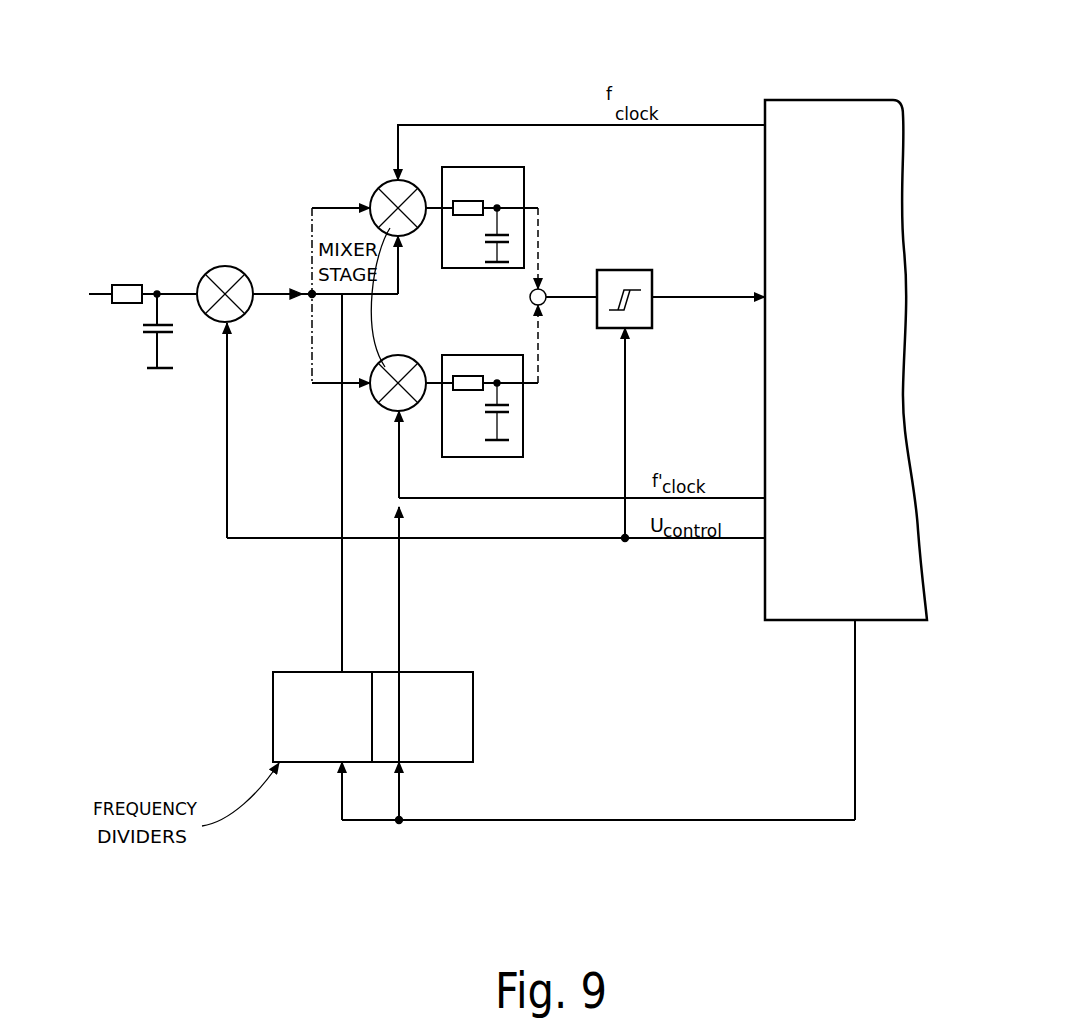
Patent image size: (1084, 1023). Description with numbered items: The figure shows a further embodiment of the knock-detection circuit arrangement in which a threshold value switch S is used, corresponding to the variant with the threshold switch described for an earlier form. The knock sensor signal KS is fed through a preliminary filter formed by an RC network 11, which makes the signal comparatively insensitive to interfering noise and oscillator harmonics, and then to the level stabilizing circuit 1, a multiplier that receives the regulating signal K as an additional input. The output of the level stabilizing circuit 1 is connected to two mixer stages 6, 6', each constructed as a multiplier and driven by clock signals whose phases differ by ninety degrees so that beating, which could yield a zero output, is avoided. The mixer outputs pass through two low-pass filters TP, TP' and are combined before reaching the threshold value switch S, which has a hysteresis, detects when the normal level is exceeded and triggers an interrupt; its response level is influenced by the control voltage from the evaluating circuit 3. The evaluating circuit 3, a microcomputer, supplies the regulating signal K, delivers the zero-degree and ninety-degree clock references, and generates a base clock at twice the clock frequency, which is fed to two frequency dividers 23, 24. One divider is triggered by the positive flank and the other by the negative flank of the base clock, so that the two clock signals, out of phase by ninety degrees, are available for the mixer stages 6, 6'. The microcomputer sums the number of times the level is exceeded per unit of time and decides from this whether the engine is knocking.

The level stabilizing circuit 1 is at (219, 274).
The evaluating circuit 3 is at (870, 132).
The mixer stage 6 is at (380, 160).
The second mixer stage 6' is at (398, 354).
The RC network 11 is at (132, 313).
The frequency divider 23 is at (287, 693).
The frequency divider 24 is at (462, 693).
The threshold value switch S is at (627, 270).
The regulating signal K is at (496, 430).
The knock sensor signal KS is at (102, 272).
The low-pass filter TP is at (482, 202).
The second low-pass filter TP' is at (482, 391).